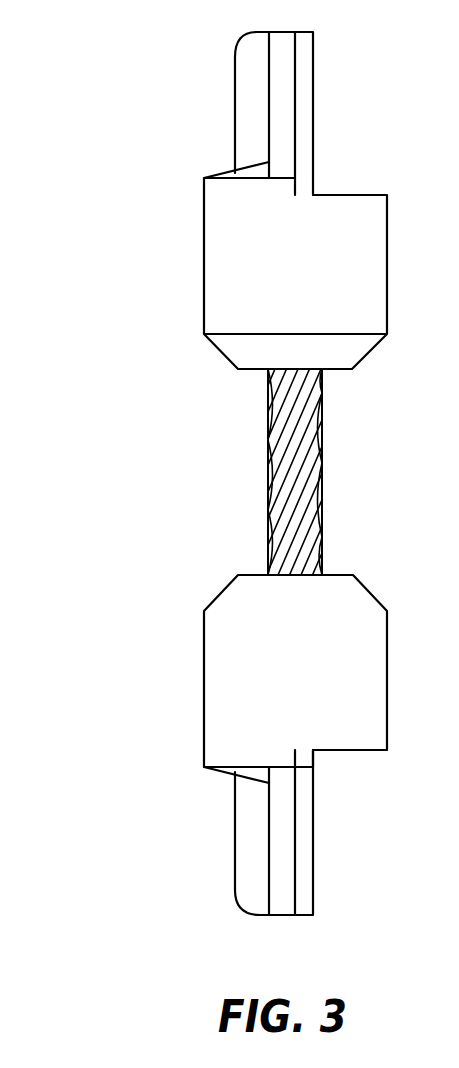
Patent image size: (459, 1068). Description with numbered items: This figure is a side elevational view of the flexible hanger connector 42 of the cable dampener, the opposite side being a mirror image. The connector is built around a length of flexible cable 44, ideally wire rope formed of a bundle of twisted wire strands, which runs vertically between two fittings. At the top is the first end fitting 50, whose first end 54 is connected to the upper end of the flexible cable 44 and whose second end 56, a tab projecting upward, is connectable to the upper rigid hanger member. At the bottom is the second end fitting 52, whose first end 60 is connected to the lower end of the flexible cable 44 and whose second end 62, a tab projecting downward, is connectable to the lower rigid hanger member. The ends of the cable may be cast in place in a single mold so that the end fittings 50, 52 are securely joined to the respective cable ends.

The flexible hanger connector 42 is at (104, 155).
The flexible cable 44 is at (268, 470).
The first end fitting 50 is at (204, 277).
The second end fitting 52 is at (204, 703).
The first end of first end fitting 54 is at (357, 273).
The second end of first end fitting 56 is at (313, 100).
The first end of second end fitting 60 is at (377, 657).
The second end of second end fitting 62 is at (313, 825).